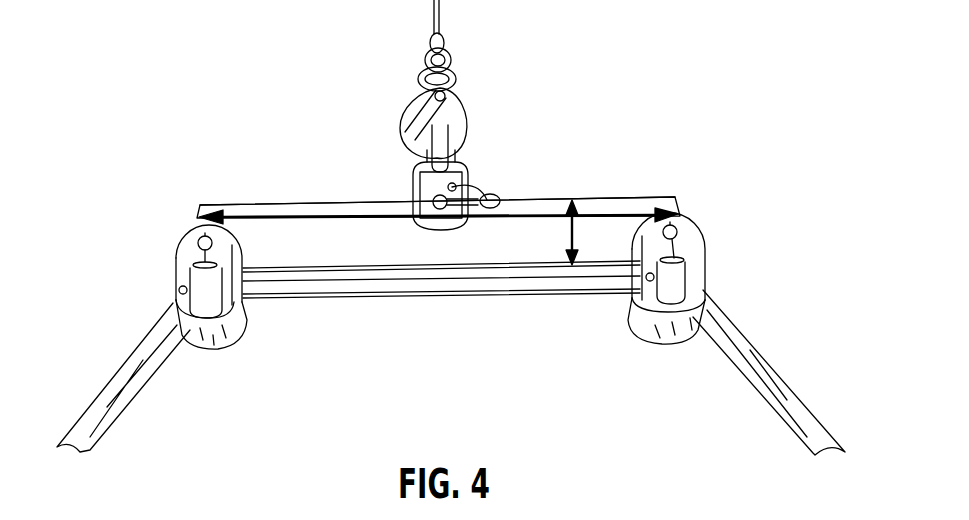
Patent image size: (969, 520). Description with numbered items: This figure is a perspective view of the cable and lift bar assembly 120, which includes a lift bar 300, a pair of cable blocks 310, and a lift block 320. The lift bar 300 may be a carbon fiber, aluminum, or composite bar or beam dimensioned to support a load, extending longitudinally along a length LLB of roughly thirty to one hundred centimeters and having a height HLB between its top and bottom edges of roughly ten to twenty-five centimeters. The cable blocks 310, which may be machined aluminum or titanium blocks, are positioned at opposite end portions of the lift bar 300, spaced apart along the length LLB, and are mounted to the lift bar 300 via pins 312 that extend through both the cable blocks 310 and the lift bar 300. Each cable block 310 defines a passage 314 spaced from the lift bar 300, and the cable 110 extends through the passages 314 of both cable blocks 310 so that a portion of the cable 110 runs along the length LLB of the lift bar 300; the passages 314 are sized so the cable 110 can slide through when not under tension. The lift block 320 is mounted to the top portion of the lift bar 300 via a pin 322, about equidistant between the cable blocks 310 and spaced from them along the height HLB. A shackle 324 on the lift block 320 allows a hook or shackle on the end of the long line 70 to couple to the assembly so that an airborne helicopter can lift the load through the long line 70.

The long line 70 is at (433, 15).
The shackle 324 is at (428, 127).
The pin 322 is at (436, 200).
The lift block 320 is at (453, 183).
The lift bar assembly 120 is at (628, 195).
The lift bar 300 is at (295, 203).
The pins 312 is at (200, 243).
The passage 314 is at (252, 300).
The cable blocks 310 is at (683, 240).
The cable 110 is at (478, 284).
The length of lift bar LLB is at (402, 218).
The height of lift bar HLB is at (549, 238).